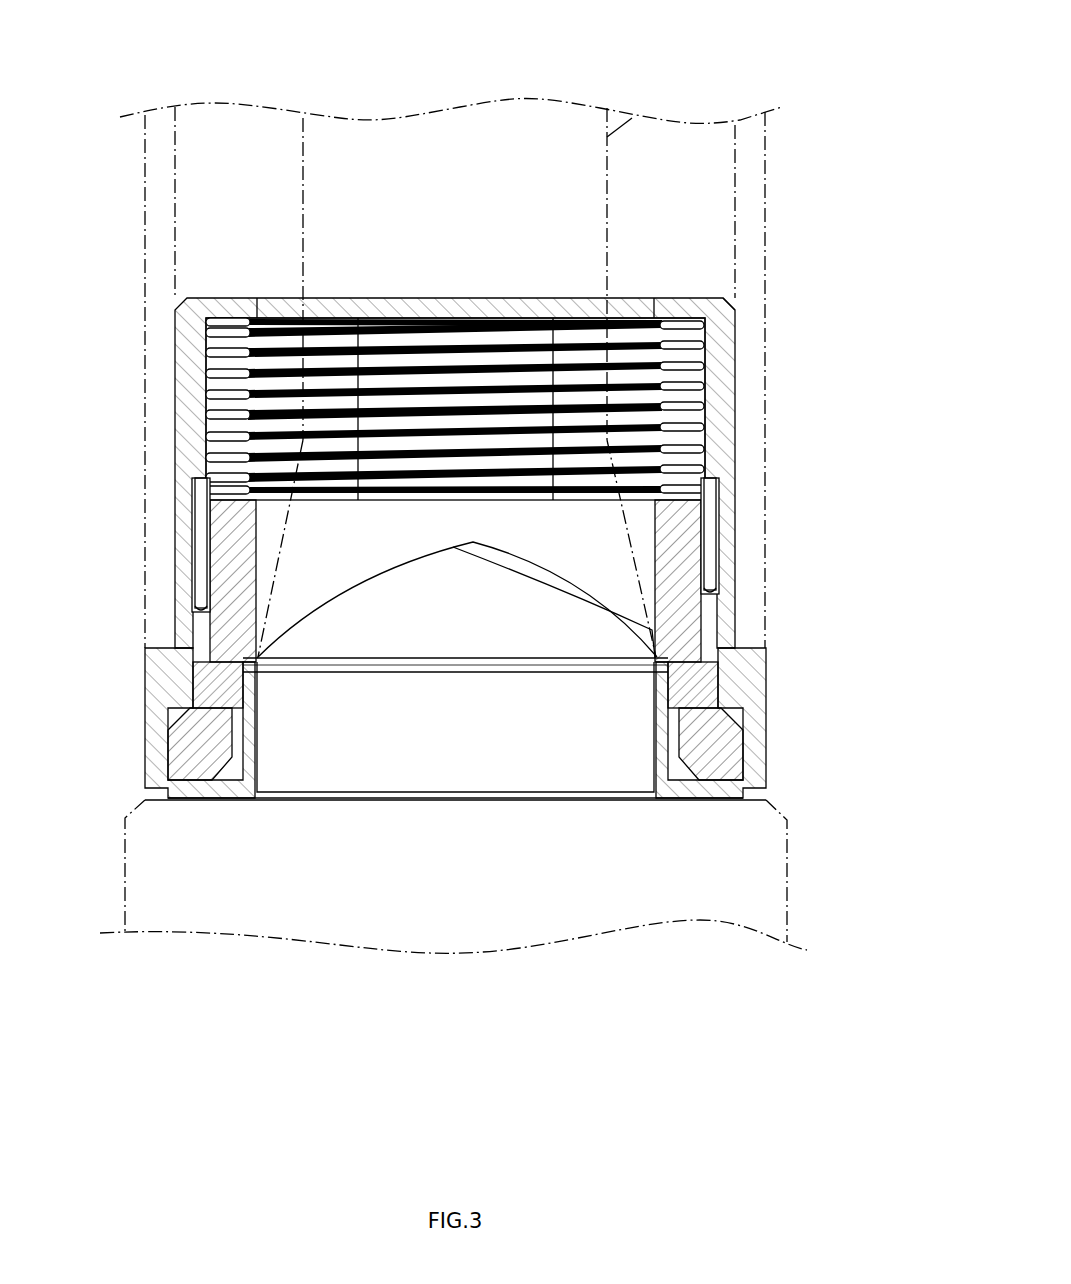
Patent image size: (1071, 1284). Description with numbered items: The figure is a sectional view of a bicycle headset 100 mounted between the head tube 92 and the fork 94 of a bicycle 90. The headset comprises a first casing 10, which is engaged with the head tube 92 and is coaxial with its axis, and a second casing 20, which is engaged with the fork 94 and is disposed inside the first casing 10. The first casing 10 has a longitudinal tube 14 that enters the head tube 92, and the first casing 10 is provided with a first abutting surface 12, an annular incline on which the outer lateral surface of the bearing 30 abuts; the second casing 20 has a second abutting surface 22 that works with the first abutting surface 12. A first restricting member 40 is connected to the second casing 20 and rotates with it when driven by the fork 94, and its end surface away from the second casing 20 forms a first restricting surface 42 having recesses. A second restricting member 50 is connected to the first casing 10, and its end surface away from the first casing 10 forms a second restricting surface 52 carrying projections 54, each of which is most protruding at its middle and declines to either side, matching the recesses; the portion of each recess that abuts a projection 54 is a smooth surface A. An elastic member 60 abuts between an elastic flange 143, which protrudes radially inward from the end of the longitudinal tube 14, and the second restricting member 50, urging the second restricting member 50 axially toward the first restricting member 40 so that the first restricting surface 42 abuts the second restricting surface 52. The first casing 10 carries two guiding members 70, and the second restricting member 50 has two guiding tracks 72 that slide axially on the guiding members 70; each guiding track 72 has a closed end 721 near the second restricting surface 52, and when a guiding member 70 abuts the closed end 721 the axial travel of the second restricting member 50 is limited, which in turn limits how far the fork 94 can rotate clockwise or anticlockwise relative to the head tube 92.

The first casing 10 is at (768, 728).
The first abutting surface 12 is at (760, 772).
The longitudinal tube 14 is at (735, 477).
The elastic flange 143 is at (680, 305).
The second casing 20 is at (692, 802).
The second abutting surface 22 is at (687, 750).
The bearing 30 is at (720, 770).
The first restricting member 40 is at (175, 693).
The first restricting surface 42 is at (308, 608).
The second restricting member 50 is at (176, 652).
The second restricting surface 52 is at (285, 632).
The projection 54 is at (647, 587).
The elastic member 60 is at (700, 387).
The guiding member 70 is at (210, 388).
The guiding track 72 is at (205, 547).
The closed end 721 is at (200, 610).
The bicycle 90 is at (497, 997).
The head tube 92 is at (765, 148).
The fork 94 is at (633, 118).
The bicycle headset 100 is at (795, 685).
The smooth surface A is at (383, 573).